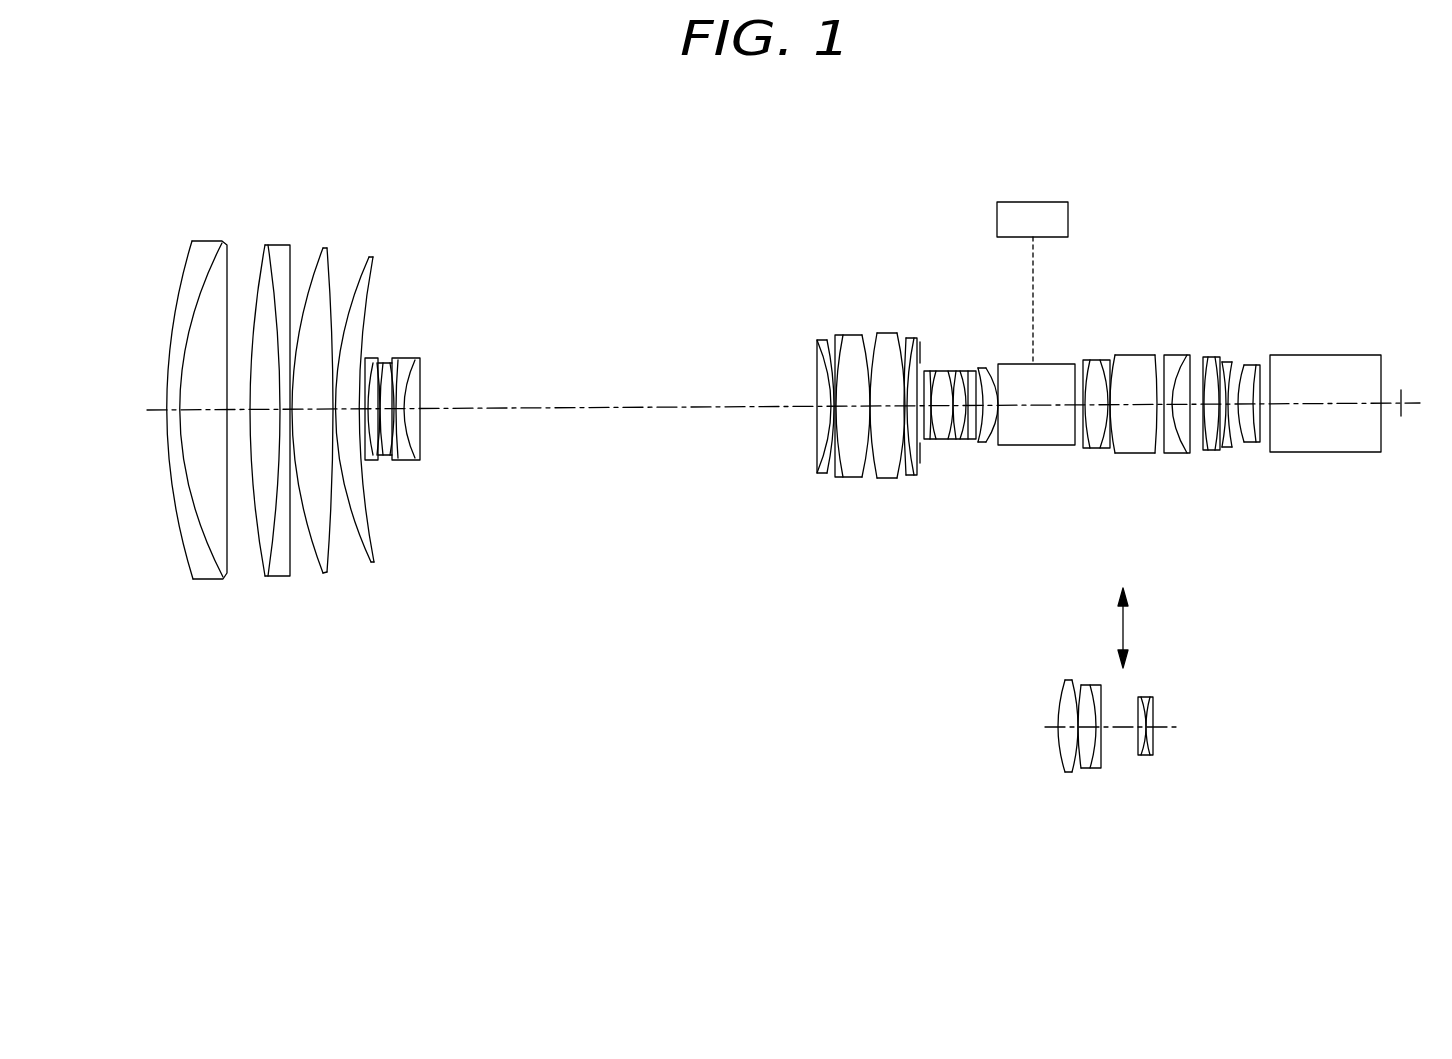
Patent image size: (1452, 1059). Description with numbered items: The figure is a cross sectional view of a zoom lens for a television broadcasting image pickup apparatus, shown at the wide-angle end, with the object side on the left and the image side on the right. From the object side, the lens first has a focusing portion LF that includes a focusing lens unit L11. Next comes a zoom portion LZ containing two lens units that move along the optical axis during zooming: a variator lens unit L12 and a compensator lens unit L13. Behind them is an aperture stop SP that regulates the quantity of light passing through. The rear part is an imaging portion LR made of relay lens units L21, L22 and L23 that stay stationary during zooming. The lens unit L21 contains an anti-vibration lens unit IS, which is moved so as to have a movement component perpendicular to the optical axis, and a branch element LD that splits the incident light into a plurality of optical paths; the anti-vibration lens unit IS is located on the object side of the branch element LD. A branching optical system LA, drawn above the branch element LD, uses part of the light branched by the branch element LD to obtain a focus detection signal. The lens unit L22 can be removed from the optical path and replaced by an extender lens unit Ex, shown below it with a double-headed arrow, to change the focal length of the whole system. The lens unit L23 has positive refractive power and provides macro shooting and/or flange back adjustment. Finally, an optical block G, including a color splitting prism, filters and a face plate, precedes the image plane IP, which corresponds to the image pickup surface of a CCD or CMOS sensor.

The focusing portion LF is at (382, 160).
The focusing lens unit L11 is at (392, 213).
The variator lens unit L12 is at (420, 323).
The zoom portion LZ is at (908, 243).
The compensator lens unit L13 is at (917, 300).
The aperture stop SP is at (920, 340).
The anti-vibration lens unit IS is at (958, 356).
The branching optical system LA is at (1032, 283).
The imaging portion LR is at (1285, 275).
The branch element LD is at (1040, 372).
The lens unit L21 is at (1080, 485).
The lens unit L22 is at (1163, 485).
The lens unit L23 is at (1270, 485).
The optical block G is at (1312, 372).
The image plane IP is at (1402, 392).
The extender lens unit Ex is at (1165, 800).